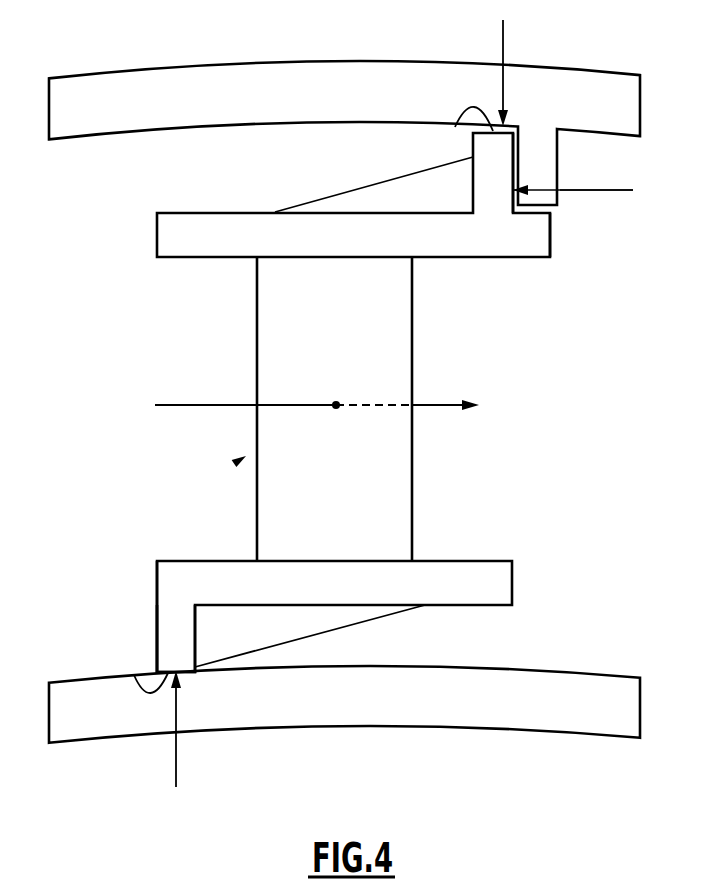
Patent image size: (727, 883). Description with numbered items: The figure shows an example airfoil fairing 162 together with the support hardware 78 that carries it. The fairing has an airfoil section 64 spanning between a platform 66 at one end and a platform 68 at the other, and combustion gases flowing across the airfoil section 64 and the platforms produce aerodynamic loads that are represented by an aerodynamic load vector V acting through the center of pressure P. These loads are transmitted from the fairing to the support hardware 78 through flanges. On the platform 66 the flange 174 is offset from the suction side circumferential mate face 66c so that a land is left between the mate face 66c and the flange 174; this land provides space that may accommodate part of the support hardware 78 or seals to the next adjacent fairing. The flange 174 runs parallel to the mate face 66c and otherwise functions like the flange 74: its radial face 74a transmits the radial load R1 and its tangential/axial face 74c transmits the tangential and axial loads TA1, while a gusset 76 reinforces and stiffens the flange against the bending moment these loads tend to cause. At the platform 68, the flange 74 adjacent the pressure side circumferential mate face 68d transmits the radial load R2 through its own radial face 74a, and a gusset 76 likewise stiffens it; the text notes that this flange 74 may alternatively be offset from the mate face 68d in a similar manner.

The airfoil section 64 is at (348, 316).
The platform 66 is at (200, 257).
The suction side circumferential mate face 66c is at (550, 237).
The platform 68 is at (513, 590).
The pressure side circumferential mate face 68d is at (157, 578).
The flange 74 is at (170, 636).
The radial face 74a is at (455, 127).
The tangential/axial face 74c is at (513, 152).
The gusset 76 is at (425, 187).
The support hardware 78 is at (280, 63).
The airfoil fairing 162 is at (240, 459).
The flange 174 is at (489, 173).
The radial load R1 is at (503, 35).
The radial load R2 is at (176, 757).
The tangential and axial loads TA1 is at (610, 191).
The aerodynamic load vector V is at (172, 405).
The center of pressure P is at (336, 405).